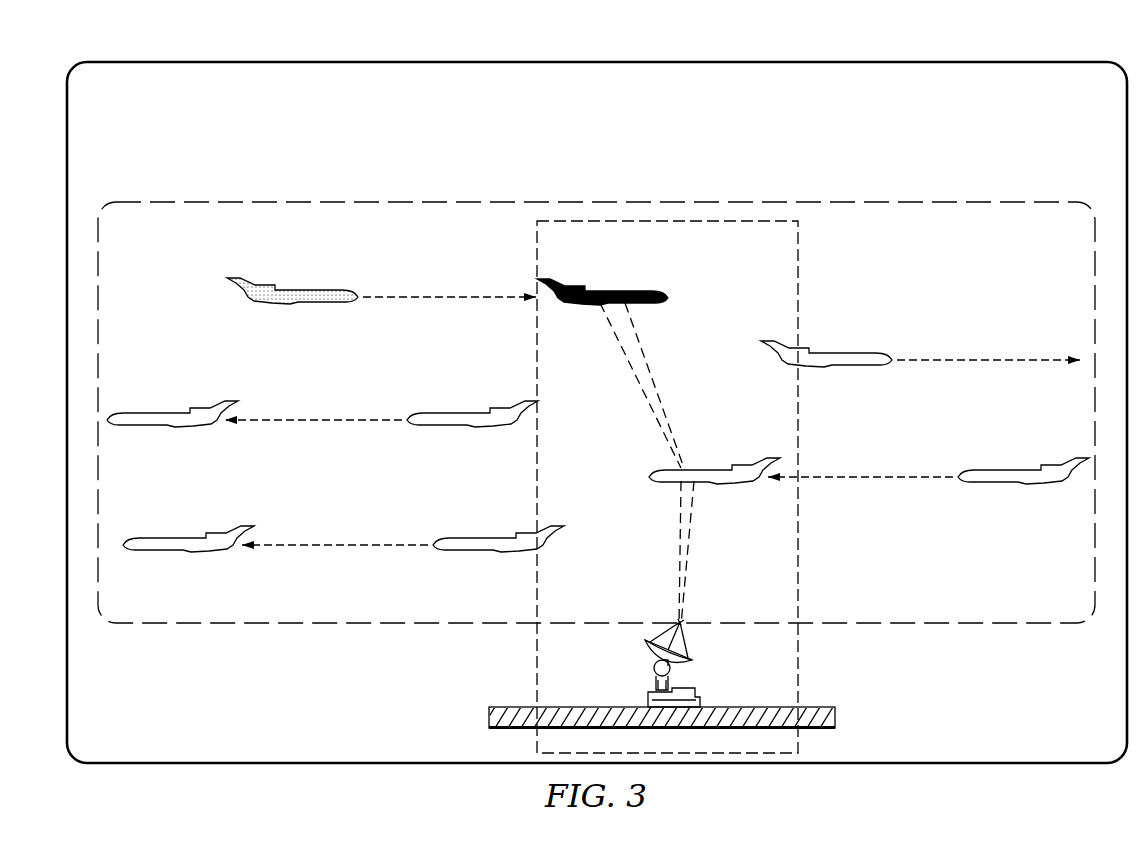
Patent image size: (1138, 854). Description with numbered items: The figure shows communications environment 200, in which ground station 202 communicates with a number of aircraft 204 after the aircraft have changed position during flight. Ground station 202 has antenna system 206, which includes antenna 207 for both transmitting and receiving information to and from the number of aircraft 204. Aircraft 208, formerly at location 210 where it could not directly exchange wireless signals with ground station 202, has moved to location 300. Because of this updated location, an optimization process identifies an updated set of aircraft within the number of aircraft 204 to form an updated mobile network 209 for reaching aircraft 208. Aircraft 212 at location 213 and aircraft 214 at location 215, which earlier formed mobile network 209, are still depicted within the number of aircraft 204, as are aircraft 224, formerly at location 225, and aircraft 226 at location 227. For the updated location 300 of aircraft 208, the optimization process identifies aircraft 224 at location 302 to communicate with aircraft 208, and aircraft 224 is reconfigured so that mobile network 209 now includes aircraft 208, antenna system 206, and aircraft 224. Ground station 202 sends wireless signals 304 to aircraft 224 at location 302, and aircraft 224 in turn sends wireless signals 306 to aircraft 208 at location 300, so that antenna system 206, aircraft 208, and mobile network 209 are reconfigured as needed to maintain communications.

The communications environment 200 is at (757, 59).
The ground station 202 is at (840, 716).
The number of aircraft 204 is at (705, 199).
The antenna system 206 is at (656, 663).
The antenna 207 is at (690, 652).
The aircraft 208 is at (618, 269).
The mobile network 209 is at (802, 266).
The location 210 is at (304, 288).
The aircraft 212 is at (158, 537).
The location 213 is at (486, 555).
The aircraft 214 is at (140, 412).
The location 215 is at (459, 430).
The aircraft 224 is at (691, 478).
The location 225 is at (1014, 490).
The aircraft 226 is at (920, 367).
The location 227 is at (849, 370).
The location 300 is at (655, 283).
The location 302 is at (651, 484).
The wireless signals 304 is at (675, 566).
The wireless signals 306 is at (644, 396).